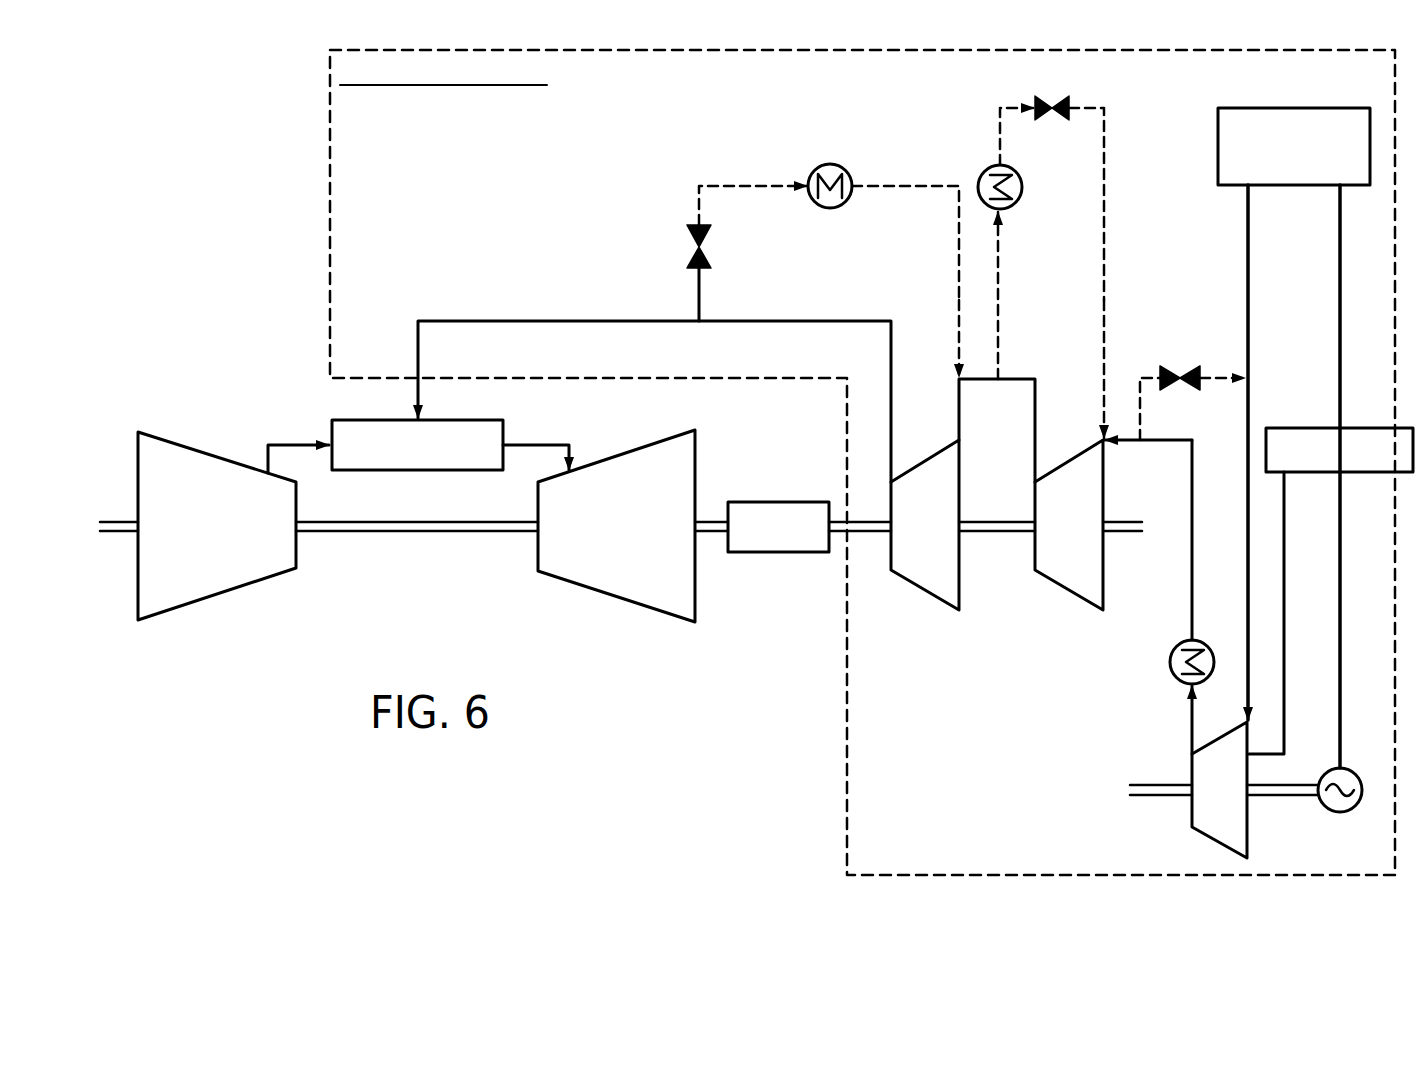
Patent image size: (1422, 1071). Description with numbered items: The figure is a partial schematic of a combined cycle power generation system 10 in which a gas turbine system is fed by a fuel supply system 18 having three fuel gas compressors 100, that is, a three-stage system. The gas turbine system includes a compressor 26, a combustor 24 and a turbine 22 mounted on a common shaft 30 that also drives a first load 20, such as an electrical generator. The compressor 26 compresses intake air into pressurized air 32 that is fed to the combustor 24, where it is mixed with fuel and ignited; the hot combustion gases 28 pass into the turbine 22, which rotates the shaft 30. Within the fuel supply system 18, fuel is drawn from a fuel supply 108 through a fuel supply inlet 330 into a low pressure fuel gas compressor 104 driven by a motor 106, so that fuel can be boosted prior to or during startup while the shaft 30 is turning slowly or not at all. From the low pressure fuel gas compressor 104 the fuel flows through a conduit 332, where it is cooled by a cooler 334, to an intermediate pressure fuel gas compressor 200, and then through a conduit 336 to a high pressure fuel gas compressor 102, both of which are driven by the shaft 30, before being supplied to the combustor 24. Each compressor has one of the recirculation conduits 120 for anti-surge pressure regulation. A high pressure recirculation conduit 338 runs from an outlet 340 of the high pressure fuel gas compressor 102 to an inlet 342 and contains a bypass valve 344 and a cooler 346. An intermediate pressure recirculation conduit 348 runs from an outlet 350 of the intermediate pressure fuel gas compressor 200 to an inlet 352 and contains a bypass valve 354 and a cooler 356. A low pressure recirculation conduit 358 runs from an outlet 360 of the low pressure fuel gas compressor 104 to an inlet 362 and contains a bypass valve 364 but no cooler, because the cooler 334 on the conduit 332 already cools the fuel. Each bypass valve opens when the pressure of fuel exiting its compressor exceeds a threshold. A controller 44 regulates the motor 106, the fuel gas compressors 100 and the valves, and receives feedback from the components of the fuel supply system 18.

The combined cycle power generation system 10 is at (197, 194).
The fuel supply system 18 is at (329, 155).
The first load 20 is at (778, 500).
The turbine 22 is at (617, 598).
The combustor 24 is at (450, 420).
The compressor 26 is at (213, 598).
The combustion gases 28 is at (536, 443).
The shaft 30 is at (416, 535).
The pressurized air 32 is at (292, 442).
The controller 44 is at (1372, 428).
The fuel gas compressors 100 is at (1158, 749).
The high pressure fuel gas compressor 102 is at (925, 590).
The low pressure fuel gas compressor 104 is at (1222, 845).
The motor 106 is at (1355, 773).
The fuel supply 108 is at (1295, 108).
The recirculation conduits 120 is at (984, 106).
The intermediate pressure fuel gas compressor 200 is at (1070, 592).
The fuel supply inlet 330 is at (1250, 405).
The conduit 332 is at (1193, 570).
The cooler 334 is at (1172, 672).
The conduit 336 is at (1033, 457).
The high pressure fuel gas compressor recirculation conduit 338 is at (895, 185).
The outlet 340 is at (818, 298).
The inlet 342 is at (944, 406).
The bypass valve 344 is at (690, 236).
The cooler 346 is at (829, 163).
The intermediate pressure fuel gas compressor recirculation conduit 348 is at (1105, 162).
The outlet 350 is at (1051, 373).
The inlet 352 is at (1094, 438).
The bypass valve 354 is at (1042, 98).
The cooler 356 is at (1021, 196).
The low pressure fuel gas compressor recirculation conduit 358 is at (1218, 384).
The outlet 360 is at (1206, 505).
The inlet 362 is at (1234, 645).
The bypass valve 364 is at (1172, 370).